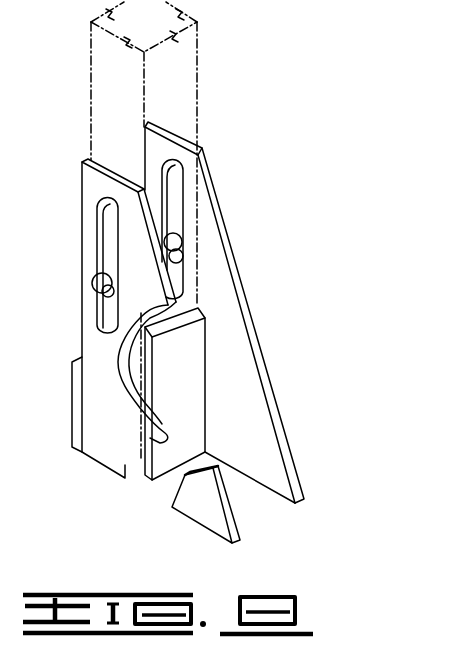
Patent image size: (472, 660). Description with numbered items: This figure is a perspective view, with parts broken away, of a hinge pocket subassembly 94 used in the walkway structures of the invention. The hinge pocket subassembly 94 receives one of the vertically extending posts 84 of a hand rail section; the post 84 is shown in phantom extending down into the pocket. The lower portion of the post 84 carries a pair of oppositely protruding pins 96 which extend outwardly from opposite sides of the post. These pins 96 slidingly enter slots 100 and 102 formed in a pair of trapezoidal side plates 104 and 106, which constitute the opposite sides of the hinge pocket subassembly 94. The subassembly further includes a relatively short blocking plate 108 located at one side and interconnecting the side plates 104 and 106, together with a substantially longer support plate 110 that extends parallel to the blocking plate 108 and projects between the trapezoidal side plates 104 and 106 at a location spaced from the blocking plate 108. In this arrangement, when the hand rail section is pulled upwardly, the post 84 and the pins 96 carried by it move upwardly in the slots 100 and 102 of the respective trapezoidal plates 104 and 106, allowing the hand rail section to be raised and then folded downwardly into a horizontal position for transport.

The vertical post 84 is at (182, 90).
The hinge pocket subassembly 94 is at (258, 325).
The pins 96 is at (100, 300).
The slot 100 is at (110, 215).
The slot 102 is at (173, 183).
The trapezoidal side plate 104 is at (98, 362).
The trapezoidal side plate 106 is at (235, 335).
The blocking plate 108 is at (77, 425).
The support plate 110 is at (190, 386).